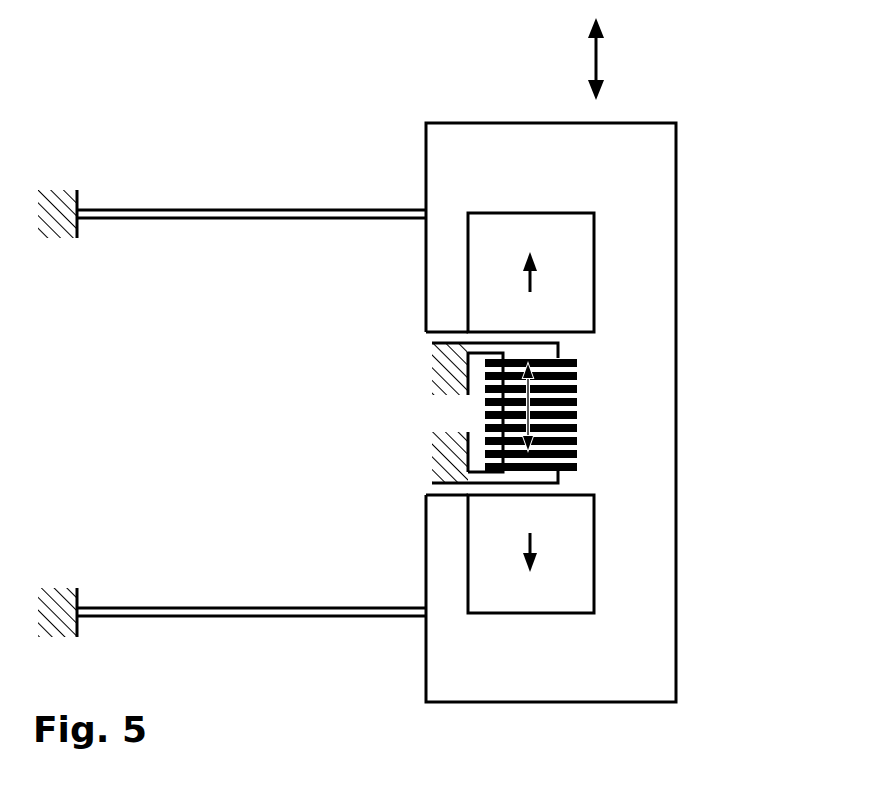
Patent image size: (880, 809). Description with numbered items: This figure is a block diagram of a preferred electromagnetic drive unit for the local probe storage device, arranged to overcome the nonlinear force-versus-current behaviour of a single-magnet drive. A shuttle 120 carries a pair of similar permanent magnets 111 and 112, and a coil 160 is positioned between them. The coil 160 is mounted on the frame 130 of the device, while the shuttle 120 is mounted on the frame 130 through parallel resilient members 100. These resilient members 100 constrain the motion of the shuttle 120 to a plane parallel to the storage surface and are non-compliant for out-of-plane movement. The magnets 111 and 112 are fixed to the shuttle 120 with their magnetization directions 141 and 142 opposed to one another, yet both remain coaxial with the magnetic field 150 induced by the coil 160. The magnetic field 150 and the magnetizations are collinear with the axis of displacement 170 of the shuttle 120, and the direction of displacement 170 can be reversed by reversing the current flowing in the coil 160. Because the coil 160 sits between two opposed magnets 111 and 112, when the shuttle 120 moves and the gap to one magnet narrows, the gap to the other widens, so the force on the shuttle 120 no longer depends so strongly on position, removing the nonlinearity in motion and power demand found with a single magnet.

The resilient members 100 is at (233, 210).
The frame 130 is at (55, 232).
The shuttle 120 is at (617, 163).
The permanent magnet 111 is at (578, 237).
The permanent magnet 112 is at (578, 592).
The magnetization direction 141 is at (533, 282).
The magnetization direction 142 is at (533, 535).
The magnetic field 150 is at (538, 393).
The coil 160 is at (577, 430).
The axis of displacement 170 is at (598, 58).